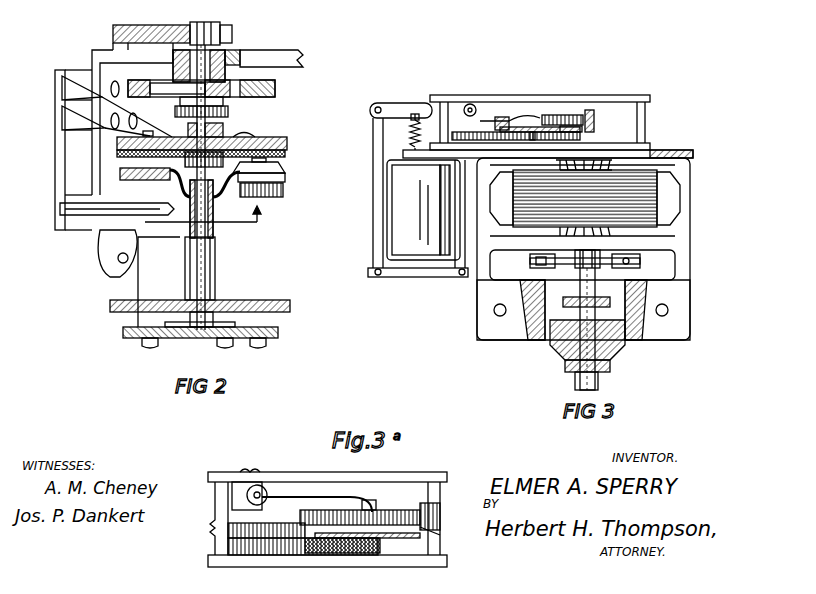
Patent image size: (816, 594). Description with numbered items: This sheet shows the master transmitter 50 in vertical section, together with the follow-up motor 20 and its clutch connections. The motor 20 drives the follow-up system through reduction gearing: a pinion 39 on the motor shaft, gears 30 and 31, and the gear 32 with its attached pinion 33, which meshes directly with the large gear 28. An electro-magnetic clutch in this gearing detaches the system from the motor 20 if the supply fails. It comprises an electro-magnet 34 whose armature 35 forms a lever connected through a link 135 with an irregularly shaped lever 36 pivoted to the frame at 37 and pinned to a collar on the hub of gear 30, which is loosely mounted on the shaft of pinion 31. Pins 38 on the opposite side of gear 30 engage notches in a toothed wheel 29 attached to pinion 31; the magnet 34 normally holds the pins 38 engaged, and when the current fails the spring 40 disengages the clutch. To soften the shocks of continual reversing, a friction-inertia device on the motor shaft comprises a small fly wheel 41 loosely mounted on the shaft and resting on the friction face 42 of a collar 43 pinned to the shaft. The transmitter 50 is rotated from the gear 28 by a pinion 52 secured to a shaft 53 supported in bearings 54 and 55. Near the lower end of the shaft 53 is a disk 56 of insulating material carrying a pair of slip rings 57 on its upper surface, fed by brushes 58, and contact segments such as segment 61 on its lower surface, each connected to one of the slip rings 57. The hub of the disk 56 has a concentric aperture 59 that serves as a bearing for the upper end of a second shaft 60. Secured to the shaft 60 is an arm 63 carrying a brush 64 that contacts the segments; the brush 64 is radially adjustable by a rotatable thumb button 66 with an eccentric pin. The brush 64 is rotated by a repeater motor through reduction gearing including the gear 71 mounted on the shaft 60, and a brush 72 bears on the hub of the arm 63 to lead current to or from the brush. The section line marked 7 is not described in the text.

In FIG. 2, the section line 7 is at (201, 222).
In FIG. 3, the motor 20 is at (690, 222).
In FIG. 2, the large gear 28 is at (280, 60).
In FIG. 3A, the large gear 28 is at (266, 524).
In FIG. 3, the toothed wheel 29 is at (540, 116).
In FIG. 3A, the toothed wheel 29 is at (367, 543).
In FIG. 3, the gear 30 is at (560, 114).
In FIG. 3A, the gear 30 is at (388, 510).
In FIG. 3, the gear (pinion) 31 is at (555, 137).
In FIG. 3A, the gear (pinion) 31 is at (365, 553).
In FIG. 3, the gear 32 is at (493, 129).
In FIG. 3A, the gear 32 is at (228, 546).
In FIG. 3, the pinion 33 is at (508, 116).
In FIG. 3A, the pinion 33 is at (292, 522).
In FIG. 3, the electro-magnet 34 is at (423, 210).
In FIG. 3, the armature 35 is at (428, 278).
In FIG. 3, the irregularly shaped lever 36 is at (407, 103).
In FIG. 3A, the irregularly shaped lever 36 is at (319, 501).
In FIG. 3, the pivot 37 is at (472, 104).
In FIG. 3A, the pivot 37 is at (259, 492).
In FIG. 3, the pins 38 is at (574, 135).
In FIG. 3A, the pins 38 is at (440, 535).
In FIG. 3, the pinion 39 is at (594, 121).
In FIG. 3A, the pinion 39 is at (440, 505).
In FIG. 3, the spring 40 is at (410, 136).
In FIG. 3, the fly wheel 41 is at (618, 350).
In FIG. 3, the friction face 42 is at (603, 366).
In FIG. 3, the collar 43 is at (570, 370).
In FIG. 2, the master transmitter 50 is at (85, 134).
In FIG. 2, the pinion 52 is at (238, 53).
In FIG. 2, the shaft 53 is at (188, 128).
In FIG. 2, the bearing 54 is at (203, 18).
In FIG. 2, the bearing 55 is at (175, 110).
In FIG. 2, the disk 56 is at (287, 143).
In FIG. 2, the slip rings 57 is at (250, 136).
In FIG. 2, the brushes 58 is at (117, 106).
In FIG. 2, the concentric aperture 59 is at (185, 160).
In FIG. 2, the second shaft 60 is at (205, 181).
In FIG. 2, the contact segment 61 is at (120, 168).
In FIG. 2, the arm 63 is at (285, 178).
In FIG. 2, the brush 64 is at (284, 166).
In FIG. 2, the thumb button 66 is at (283, 195).
In FIG. 2, the reduction gear 71 is at (214, 308).
In FIG. 2, the brush 72 is at (117, 199).
In FIG. 3, the link 135 is at (373, 197).